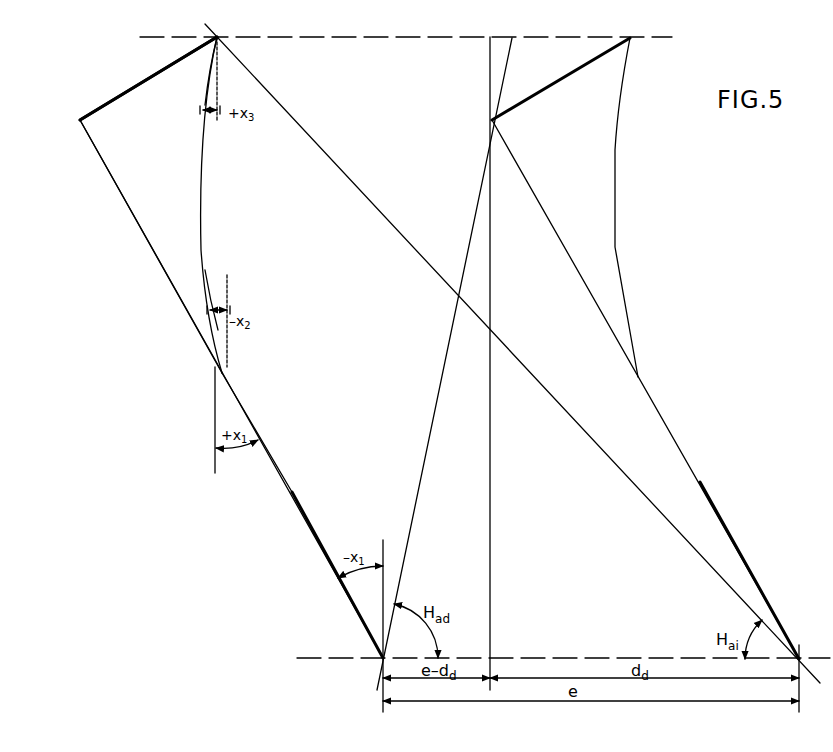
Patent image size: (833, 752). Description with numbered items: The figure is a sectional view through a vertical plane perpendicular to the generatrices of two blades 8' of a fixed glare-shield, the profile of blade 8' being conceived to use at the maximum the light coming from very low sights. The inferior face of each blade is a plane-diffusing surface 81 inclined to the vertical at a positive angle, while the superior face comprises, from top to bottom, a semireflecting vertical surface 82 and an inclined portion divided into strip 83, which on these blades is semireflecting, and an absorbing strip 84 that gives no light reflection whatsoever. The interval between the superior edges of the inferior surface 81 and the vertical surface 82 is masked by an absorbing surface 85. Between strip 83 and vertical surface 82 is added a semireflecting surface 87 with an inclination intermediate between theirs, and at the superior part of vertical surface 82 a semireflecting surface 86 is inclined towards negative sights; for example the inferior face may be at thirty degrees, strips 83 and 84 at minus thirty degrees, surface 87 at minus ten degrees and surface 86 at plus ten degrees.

The blade 8' is at (438, 348).
The plane-diffusing surface 81 is at (180, 305).
The semireflecting vertical surface 82 is at (213, 210).
The diffusing strip 83 is at (256, 432).
The absorbing strip 84 is at (319, 537).
The absorbing surface 85 is at (153, 78).
The semireflecting surface 86 is at (213, 96).
The semireflecting surface 87 is at (214, 293).